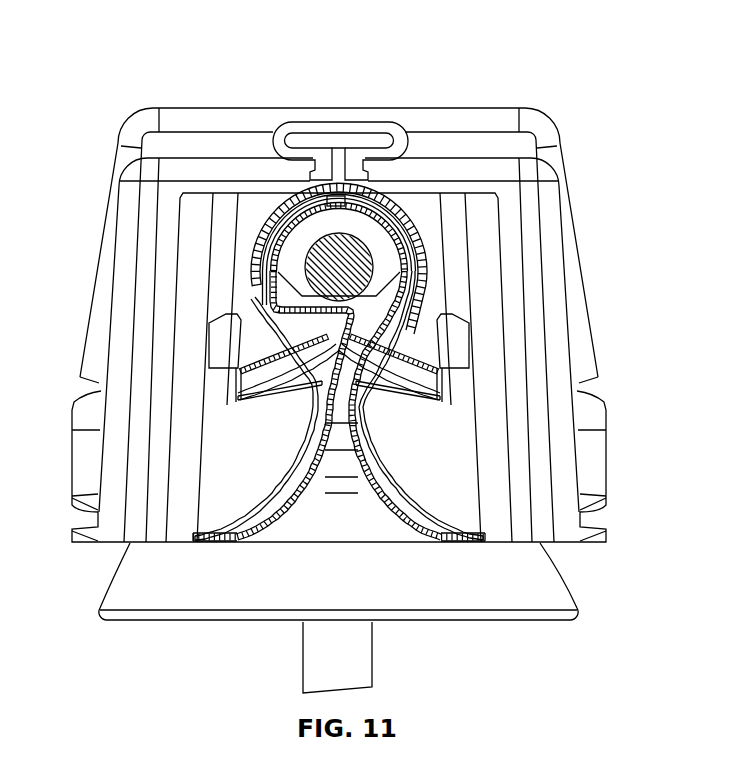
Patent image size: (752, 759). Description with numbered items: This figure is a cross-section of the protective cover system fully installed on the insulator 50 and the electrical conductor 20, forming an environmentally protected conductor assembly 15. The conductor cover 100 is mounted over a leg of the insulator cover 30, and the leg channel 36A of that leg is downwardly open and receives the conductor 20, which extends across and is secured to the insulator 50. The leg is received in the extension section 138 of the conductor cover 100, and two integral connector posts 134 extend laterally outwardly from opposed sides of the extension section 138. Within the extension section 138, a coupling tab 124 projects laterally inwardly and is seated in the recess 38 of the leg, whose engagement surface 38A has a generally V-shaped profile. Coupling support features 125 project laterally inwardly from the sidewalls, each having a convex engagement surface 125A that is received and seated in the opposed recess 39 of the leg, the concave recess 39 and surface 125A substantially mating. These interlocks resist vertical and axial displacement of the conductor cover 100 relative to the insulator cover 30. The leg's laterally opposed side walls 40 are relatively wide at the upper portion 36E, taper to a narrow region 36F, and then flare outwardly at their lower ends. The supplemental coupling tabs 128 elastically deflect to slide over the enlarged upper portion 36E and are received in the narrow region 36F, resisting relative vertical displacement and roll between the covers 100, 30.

The environmentally protected conductor assembly 15 is at (543, 45).
The insulator cover 30 is at (378, 97).
The conductor cover 100 is at (405, 176).
The leg channel 36A is at (262, 190).
The extension section 138 is at (306, 233).
The electrical conductor 20 is at (330, 252).
The upper portion of the leg 36E is at (416, 244).
The narrow region 36F is at (440, 465).
The coupling tab 124 is at (275, 327).
The coupling support feature 125 is at (228, 352).
The engagement surface 125A is at (420, 367).
The connector post 134 is at (222, 352).
The recess 38 is at (240, 390).
The engagement surface 38A is at (270, 388).
The recess 39 is at (305, 437).
The side wall 40 is at (232, 540).
The supplemental coupling tab 128 is at (340, 423).
The insulator 50 is at (587, 598).